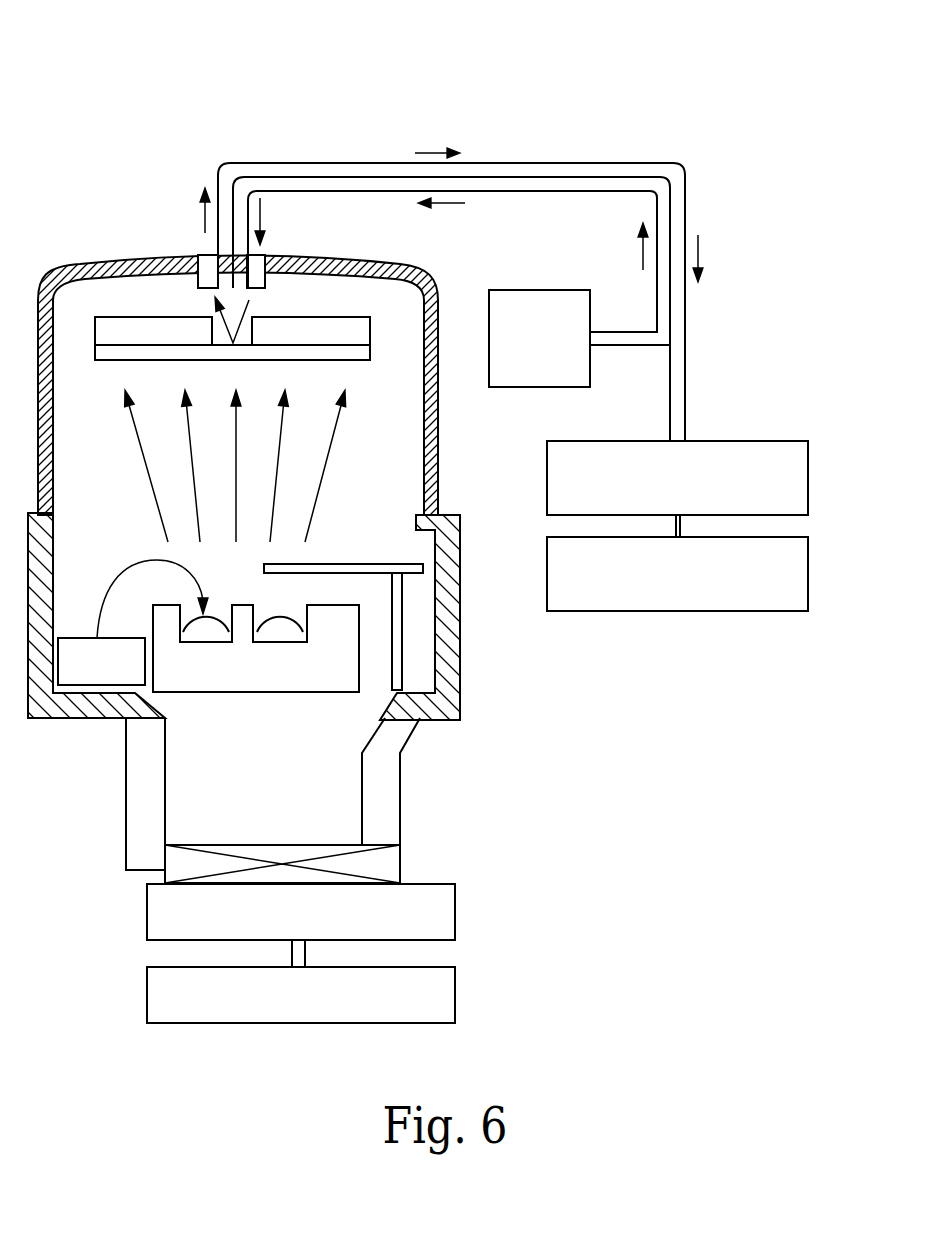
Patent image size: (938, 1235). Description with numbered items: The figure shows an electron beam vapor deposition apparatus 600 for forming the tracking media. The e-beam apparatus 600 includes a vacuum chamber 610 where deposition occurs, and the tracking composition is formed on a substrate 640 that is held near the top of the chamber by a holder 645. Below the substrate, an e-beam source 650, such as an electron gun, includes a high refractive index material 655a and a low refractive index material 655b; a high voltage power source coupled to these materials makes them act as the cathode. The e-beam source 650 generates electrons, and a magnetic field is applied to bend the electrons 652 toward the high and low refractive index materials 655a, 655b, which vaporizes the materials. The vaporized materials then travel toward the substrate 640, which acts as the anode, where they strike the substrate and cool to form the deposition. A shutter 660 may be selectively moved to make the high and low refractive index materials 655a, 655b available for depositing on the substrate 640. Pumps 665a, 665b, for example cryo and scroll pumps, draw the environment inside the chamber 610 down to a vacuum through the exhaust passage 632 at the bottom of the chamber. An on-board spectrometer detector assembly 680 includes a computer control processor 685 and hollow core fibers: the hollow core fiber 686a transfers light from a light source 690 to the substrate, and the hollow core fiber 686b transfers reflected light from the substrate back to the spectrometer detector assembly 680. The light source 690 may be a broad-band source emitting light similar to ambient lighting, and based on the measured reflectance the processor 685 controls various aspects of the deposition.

The electron beam vapor deposition apparatus 600 is at (116, 94).
The vacuum chamber 610 is at (72, 270).
The holder 645 is at (173, 323).
The substrate 640 is at (117, 357).
The hollow core fiber 686a is at (535, 185).
The hollow core fiber 686b is at (523, 172).
The light source 690 is at (516, 352).
The on-board spectrometer detector assembly 680 is at (660, 487).
The computer control processor 685 is at (660, 590).
The electrons 652 is at (130, 562).
The high refractive index material 655a is at (203, 633).
The low refractive index material 655b is at (282, 633).
The shutter 660 is at (350, 564).
The e-beam source 650 is at (88, 670).
The exhaust passage 632 is at (250, 795).
The pump 665a is at (275, 925).
The pump 665b is at (275, 1010).